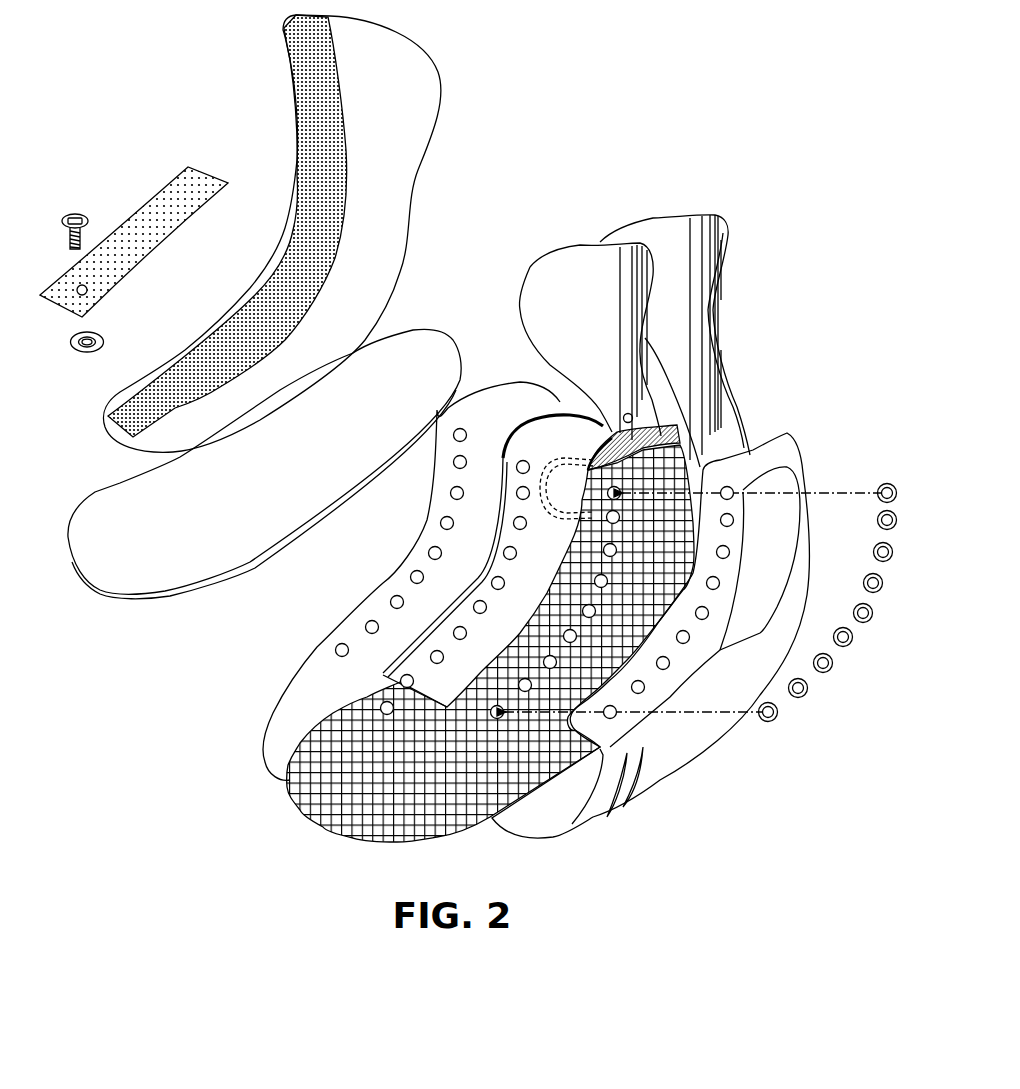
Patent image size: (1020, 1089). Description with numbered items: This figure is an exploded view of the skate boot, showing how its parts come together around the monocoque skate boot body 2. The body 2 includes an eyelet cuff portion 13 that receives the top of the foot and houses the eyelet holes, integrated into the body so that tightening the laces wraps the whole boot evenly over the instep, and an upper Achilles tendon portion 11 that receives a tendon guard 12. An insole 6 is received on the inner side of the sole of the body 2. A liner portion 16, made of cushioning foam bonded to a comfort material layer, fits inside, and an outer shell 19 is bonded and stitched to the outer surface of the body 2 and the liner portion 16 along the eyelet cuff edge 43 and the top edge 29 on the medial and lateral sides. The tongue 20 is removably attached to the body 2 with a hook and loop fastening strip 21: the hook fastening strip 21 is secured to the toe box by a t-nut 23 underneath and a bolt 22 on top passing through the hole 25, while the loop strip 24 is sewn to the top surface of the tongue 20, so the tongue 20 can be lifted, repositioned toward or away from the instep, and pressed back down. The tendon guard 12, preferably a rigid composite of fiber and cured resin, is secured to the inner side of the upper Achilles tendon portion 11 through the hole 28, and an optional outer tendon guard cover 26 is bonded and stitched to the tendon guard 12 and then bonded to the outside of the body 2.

The monocoque skate boot body 2 is at (283, 778).
The insole 6 is at (120, 480).
The upper Achilles tendon portion 11 is at (562, 445).
The tendon guard 12 is at (610, 280).
The eyelet cuff portion 13 is at (530, 657).
The liner portion 16 is at (558, 402).
The outer shell 19 is at (780, 457).
The tongue 20 is at (447, 56).
The fastening strip 21 is at (180, 168).
The bolt 22 is at (90, 208).
The t-nut 23 is at (102, 328).
The loop strip 24 is at (313, 137).
The hole 25 is at (383, 704).
The outer tendon guard cover 26 is at (677, 243).
The hole 28 is at (624, 415).
The top edge 29 is at (462, 353).
The eyelet cuff edge 43 is at (446, 602).